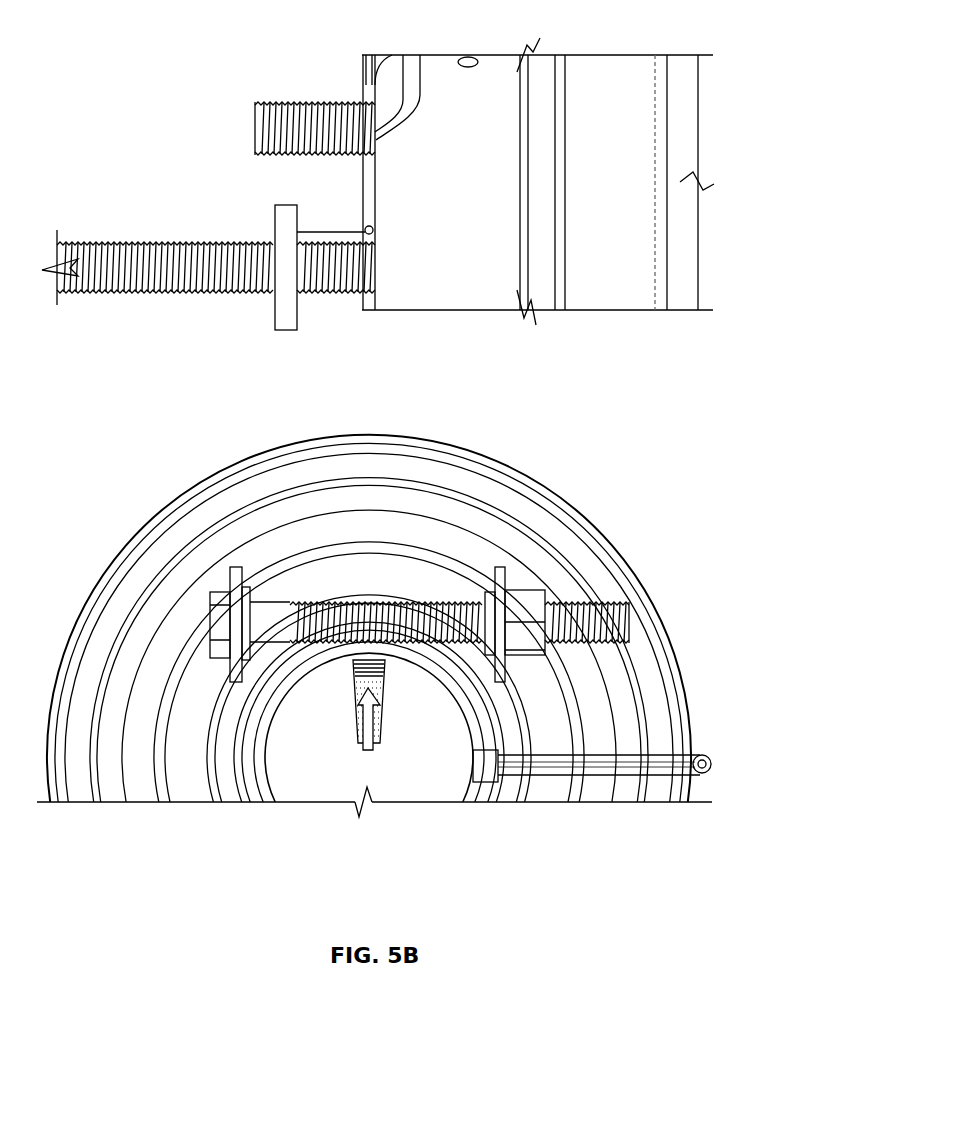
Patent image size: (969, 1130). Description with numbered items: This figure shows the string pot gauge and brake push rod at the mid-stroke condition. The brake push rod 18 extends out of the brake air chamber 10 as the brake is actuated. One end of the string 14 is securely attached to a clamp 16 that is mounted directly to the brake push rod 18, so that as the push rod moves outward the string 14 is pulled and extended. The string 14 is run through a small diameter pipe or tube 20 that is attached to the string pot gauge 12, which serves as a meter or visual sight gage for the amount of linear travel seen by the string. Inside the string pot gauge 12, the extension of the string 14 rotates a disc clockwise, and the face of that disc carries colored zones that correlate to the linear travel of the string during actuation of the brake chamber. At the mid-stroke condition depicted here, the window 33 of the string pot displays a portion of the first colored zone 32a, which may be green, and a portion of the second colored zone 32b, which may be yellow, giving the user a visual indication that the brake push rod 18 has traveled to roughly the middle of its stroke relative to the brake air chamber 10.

The brake air chamber 10 is at (557, 56).
The string pot gauge 12 is at (420, 794).
The string 14 is at (323, 232).
The clamp 16 is at (275, 220).
The brake push rod 18 is at (130, 242).
The pipe or tube 20 is at (700, 753).
The first colored zone 32a is at (384, 676).
The second colored zone 32b is at (361, 722).
The window 33 is at (383, 710).